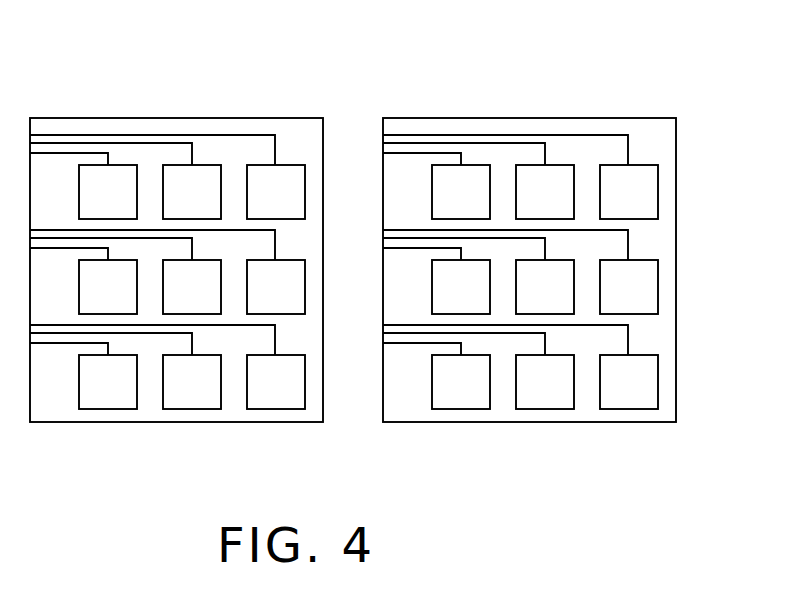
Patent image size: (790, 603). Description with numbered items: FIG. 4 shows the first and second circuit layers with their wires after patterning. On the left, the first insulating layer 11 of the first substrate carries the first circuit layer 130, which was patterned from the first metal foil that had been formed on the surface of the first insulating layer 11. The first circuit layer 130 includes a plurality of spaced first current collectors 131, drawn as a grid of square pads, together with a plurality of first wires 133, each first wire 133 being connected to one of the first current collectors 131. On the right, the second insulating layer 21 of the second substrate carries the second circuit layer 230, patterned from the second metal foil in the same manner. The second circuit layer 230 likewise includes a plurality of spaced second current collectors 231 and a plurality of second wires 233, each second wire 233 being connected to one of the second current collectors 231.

The first insulating layer 11 is at (303, 128).
The first circuit layer 130 is at (263, 70).
The first current collectors 131 is at (270, 174).
The first wires 133 is at (125, 135).
The second insulating layer 21 is at (656, 128).
The second circuit layer 230 is at (617, 70).
The second current collectors 231 is at (623, 174).
The second wires 233 is at (478, 135).